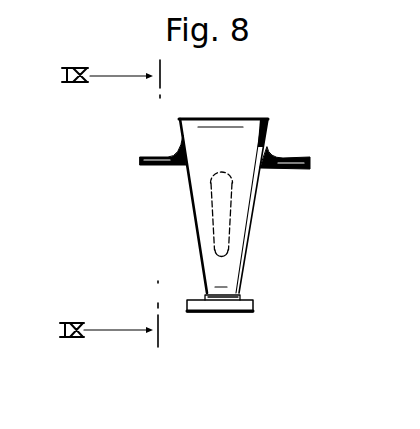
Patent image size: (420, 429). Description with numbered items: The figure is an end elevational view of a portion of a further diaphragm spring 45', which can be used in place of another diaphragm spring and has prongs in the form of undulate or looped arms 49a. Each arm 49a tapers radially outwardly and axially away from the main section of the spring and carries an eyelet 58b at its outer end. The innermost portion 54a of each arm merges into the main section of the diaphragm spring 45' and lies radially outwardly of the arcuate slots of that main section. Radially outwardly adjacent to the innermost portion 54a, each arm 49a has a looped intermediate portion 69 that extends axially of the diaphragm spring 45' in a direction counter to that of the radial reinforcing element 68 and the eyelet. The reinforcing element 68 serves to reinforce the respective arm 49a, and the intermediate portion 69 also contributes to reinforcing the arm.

The diaphragm spring 45' is at (228, 221).
The looped intermediate portion 69 is at (274, 119).
The innermost portion 54a is at (140, 159).
The arm 49a is at (242, 210).
The radial reinforcing element 68 is at (226, 259).
The eyelet 58b is at (238, 313).